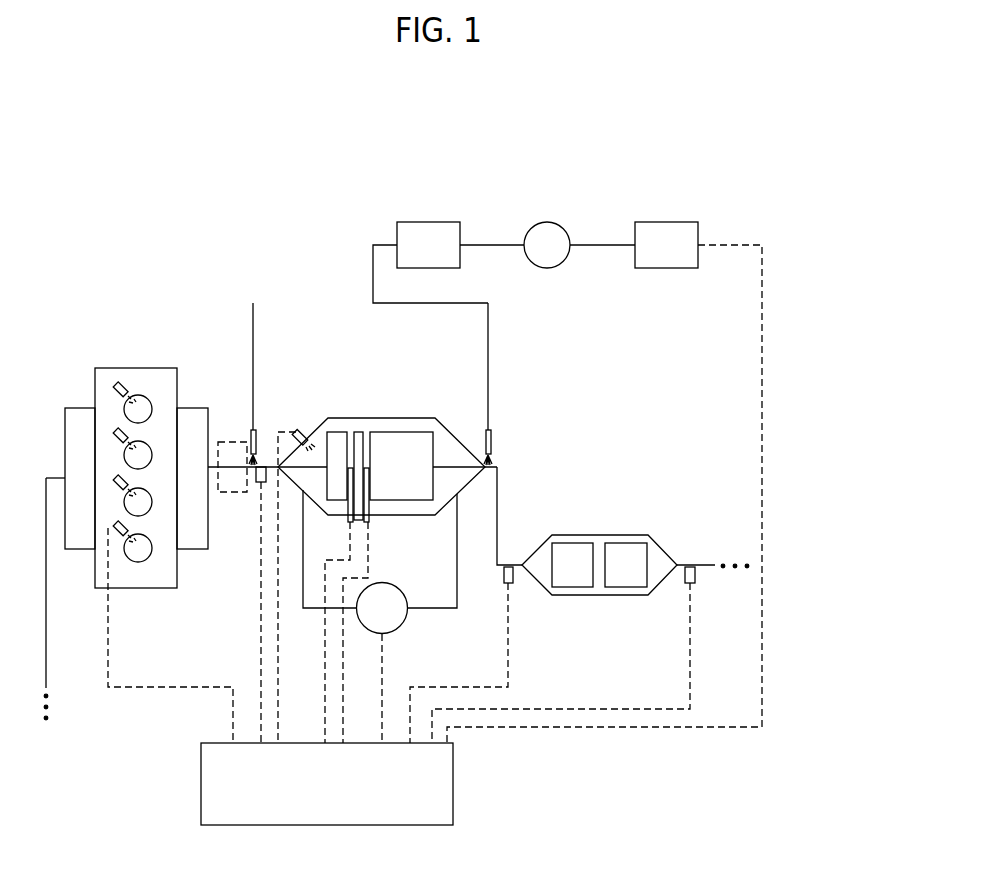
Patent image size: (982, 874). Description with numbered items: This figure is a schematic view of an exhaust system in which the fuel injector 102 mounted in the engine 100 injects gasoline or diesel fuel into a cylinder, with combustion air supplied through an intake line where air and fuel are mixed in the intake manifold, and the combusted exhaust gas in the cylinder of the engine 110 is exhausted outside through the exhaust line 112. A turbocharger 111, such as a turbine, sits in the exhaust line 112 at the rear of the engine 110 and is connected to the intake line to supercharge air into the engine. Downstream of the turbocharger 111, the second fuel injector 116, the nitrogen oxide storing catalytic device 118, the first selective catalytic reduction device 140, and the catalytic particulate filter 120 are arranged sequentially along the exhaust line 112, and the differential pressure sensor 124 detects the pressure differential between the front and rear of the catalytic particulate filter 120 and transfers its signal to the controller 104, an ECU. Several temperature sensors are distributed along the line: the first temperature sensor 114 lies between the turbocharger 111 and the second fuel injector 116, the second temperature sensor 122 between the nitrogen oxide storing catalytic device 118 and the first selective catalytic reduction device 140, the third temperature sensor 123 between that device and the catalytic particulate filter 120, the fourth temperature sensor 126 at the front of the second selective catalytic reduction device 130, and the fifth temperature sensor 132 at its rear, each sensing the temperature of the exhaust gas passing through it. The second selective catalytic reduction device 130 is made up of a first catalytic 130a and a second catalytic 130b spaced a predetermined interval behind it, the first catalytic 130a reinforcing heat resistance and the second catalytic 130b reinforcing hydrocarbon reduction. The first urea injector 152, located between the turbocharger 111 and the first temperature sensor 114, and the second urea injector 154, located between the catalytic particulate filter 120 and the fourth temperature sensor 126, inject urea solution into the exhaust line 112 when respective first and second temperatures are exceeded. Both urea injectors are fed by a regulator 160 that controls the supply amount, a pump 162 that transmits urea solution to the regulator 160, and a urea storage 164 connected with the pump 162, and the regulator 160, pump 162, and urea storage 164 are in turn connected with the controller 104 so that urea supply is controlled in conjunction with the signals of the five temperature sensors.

The engine 100 is at (46, 660).
The fuel injector 102 is at (115, 386).
The controller 104 is at (453, 785).
The engine 110 is at (165, 368).
The turbocharger 111 is at (225, 442).
The exhaust line 112 is at (270, 465).
The first temperature sensor 114 is at (258, 483).
The second fuel injector 116 is at (298, 431).
The nitrogen oxide storing catalytic device 118 is at (343, 432).
The catalytic particulate filter 120 is at (413, 432).
The second temperature sensor 122 is at (353, 522).
The third temperature sensor 123 is at (370, 520).
The differential pressure sensor 124 is at (405, 620).
The fourth temperature sensor 126 is at (510, 567).
The second selective catalytic reduction device 130 is at (599, 528).
The first catalytic 130a is at (572, 543).
The second catalytic 130b is at (630, 543).
The fifth temperature sensor 132 is at (690, 567).
The first selective catalytic reduction device 140 is at (359, 438).
The first urea injector 152 is at (252, 430).
The second urea injector 154 is at (492, 443).
The regulator 160 is at (427, 222).
The pump 162 is at (546, 222).
The urea storage 164 is at (665, 222).